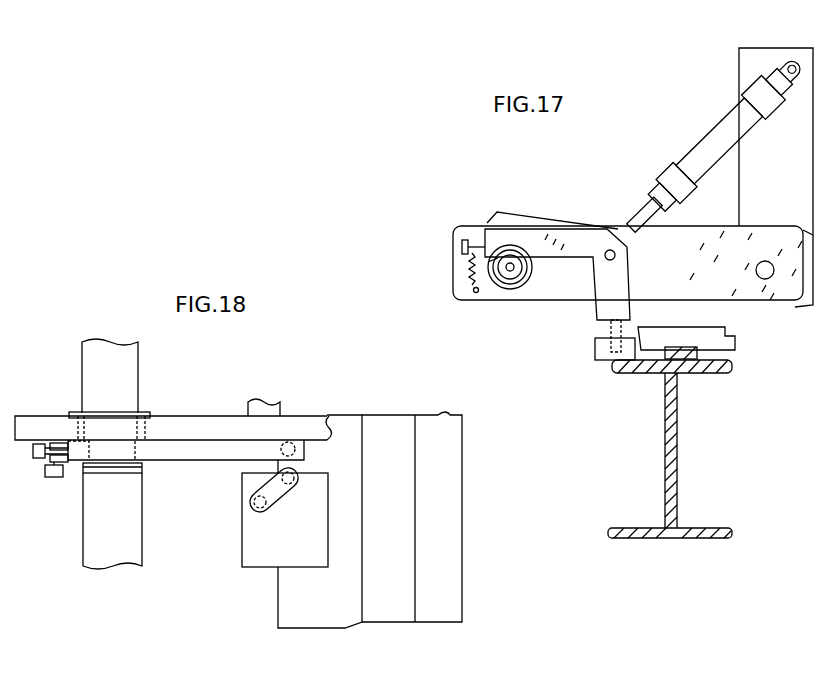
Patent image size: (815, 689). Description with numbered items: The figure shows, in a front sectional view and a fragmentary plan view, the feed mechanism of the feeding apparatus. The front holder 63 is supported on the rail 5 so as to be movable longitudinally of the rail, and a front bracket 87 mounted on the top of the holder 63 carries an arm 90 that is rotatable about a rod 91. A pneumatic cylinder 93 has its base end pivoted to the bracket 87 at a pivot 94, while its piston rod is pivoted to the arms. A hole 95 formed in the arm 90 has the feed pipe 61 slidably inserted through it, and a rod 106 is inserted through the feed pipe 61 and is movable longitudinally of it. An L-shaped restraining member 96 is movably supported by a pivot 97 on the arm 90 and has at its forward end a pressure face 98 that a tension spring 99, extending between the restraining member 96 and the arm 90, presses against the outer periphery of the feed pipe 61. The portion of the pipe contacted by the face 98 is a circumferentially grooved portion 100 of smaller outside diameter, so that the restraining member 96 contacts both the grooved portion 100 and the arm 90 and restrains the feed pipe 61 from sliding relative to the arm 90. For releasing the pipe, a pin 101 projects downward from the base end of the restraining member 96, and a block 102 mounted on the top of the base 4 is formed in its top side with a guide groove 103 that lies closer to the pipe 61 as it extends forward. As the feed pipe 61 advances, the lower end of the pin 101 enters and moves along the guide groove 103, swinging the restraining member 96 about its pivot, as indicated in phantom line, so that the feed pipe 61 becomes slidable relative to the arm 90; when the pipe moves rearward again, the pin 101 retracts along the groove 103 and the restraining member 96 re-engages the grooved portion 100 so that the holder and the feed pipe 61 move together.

In FIG. 17, the base 4 is at (680, 445).
In FIG. 18, the base 4 is at (333, 617).
In FIG. 17, the rail 5 is at (700, 355).
In FIG. 18, the rail 5 is at (390, 614).
In FIG. 17, the feed pipe 61 is at (512, 284).
In FIG. 18, the feed pipe 61 is at (136, 528).
In FIG. 17, the front holder 63 is at (737, 330).
In FIG. 17, the front bracket 87 is at (750, 178).
In FIG. 17, the arm 90 is at (562, 293).
In FIG. 18, the arm 90 is at (184, 416).
In FIG. 17, the rod 91 is at (759, 266).
In FIG. 17, the pneumatic cylinder 93 is at (702, 136).
In FIG. 17, the pivot 94 is at (792, 64).
In FIG. 17, the hole 95 is at (500, 279).
In FIG. 17, the restraining member 96 is at (585, 242).
In FIG. 18, the restraining member 96 is at (191, 461).
In FIG. 17, the pivot 97 is at (616, 255).
In FIG. 17, the pressure face 98 is at (516, 268).
In FIG. 17, the tension spring 99 is at (467, 266).
In FIG. 17, the grooved portion 100 is at (492, 284).
In FIG. 17, the pin 101 is at (622, 334).
In FIG. 18, the pin 101 is at (296, 449).
In FIG. 17, the block 102 is at (606, 362).
In FIG. 18, the block 102 is at (245, 568).
In FIG. 18, the guide groove 103 is at (280, 490).
In FIG. 17, the rod 106 is at (522, 287).